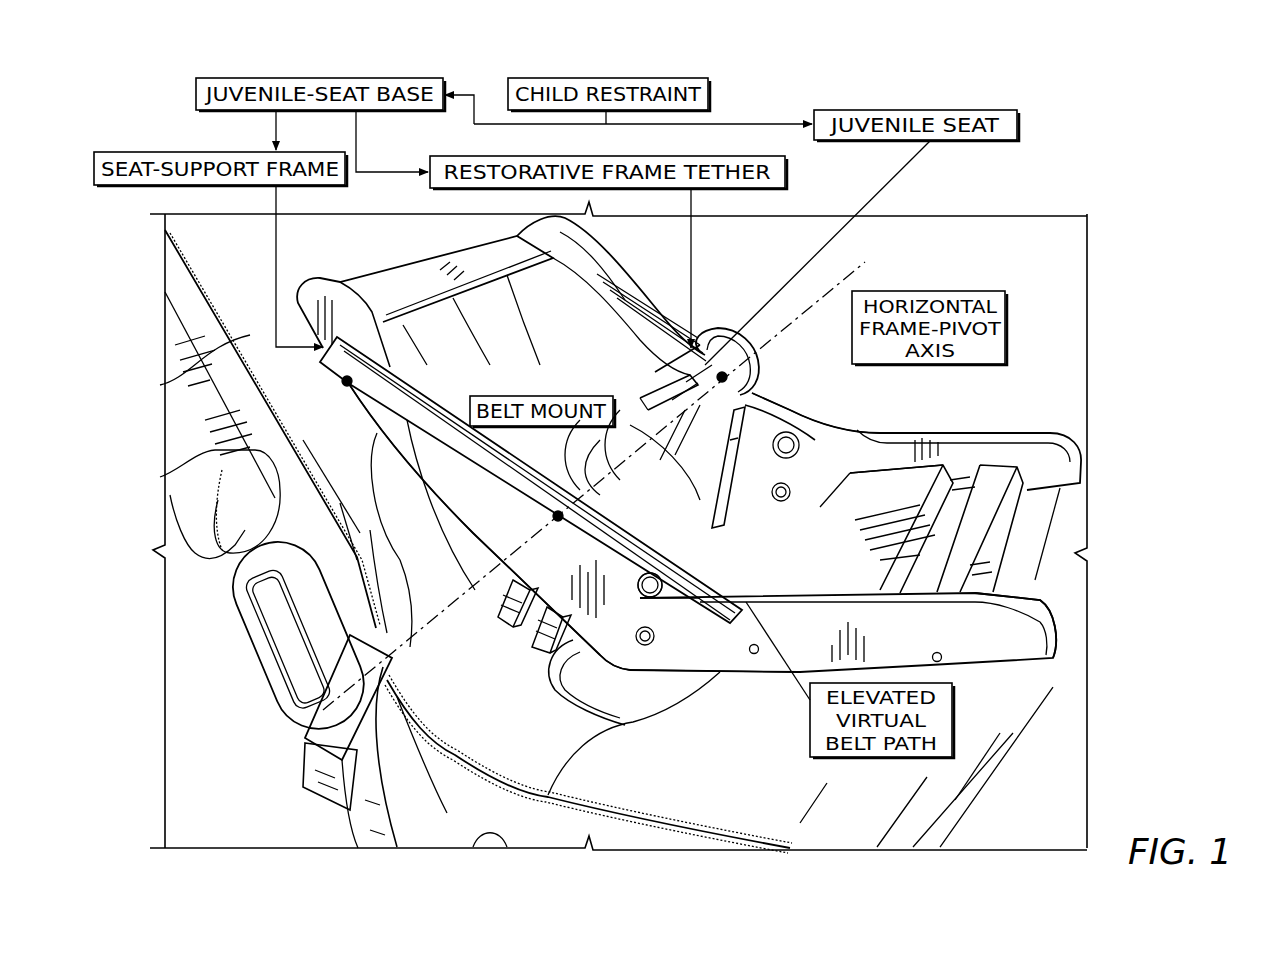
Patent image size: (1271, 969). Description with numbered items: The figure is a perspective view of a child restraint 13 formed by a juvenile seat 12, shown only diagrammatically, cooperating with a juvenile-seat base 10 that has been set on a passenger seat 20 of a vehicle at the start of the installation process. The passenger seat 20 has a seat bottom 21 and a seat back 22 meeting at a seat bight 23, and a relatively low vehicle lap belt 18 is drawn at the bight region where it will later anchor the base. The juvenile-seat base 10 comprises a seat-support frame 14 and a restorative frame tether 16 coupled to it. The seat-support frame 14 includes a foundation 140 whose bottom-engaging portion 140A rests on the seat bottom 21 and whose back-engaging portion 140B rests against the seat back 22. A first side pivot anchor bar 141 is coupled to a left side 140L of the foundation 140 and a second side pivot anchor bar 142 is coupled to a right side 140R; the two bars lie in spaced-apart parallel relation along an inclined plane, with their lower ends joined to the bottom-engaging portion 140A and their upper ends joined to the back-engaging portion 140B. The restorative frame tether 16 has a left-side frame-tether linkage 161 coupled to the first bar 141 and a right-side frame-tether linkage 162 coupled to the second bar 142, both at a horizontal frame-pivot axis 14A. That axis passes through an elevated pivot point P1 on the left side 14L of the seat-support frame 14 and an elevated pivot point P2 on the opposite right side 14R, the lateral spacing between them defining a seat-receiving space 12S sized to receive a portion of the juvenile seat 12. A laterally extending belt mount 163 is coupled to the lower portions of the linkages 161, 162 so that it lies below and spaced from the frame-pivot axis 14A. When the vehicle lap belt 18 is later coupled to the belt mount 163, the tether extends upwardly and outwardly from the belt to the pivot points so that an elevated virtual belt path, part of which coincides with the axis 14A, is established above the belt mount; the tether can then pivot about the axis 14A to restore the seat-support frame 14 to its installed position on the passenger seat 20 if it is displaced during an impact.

The juvenile-seat base 10 is at (239, 78).
The juvenile seat 12 is at (972, 141).
The seat-receiving space 12S is at (914, 492).
The child restraint 13 is at (549, 78).
The seat-support frame 14 is at (140, 152).
The horizontal frame-pivot axis 14A is at (940, 291).
The left side of seat-support frame 14L is at (473, 533).
The right side of seat-support frame 14R is at (800, 396).
The restorative frame tether 16 is at (740, 156).
The vehicle lap belt 18 is at (352, 672).
The passenger seat 20 is at (238, 460).
The seat bottom 21 is at (666, 790).
The seat back 22 is at (162, 385).
The seat bight 23 is at (445, 640).
The foundation 140 is at (678, 652).
The bottom-engaging portion 140A is at (1052, 632).
The back-engaging portion 140B is at (422, 289).
The left side of foundation 140L is at (720, 642).
The right side of foundation 140R is at (830, 450).
The first side pivot anchor bar 141 is at (484, 456).
The second side pivot anchor bar 142 is at (617, 290).
The left-side frame-tether linkage 161 is at (640, 590).
The right-side frame-tether linkage 162 is at (720, 345).
The belt mount 163 is at (528, 396).
The elevated pivot point P1 is at (552, 514).
The elevated pivot point P2 is at (742, 376).